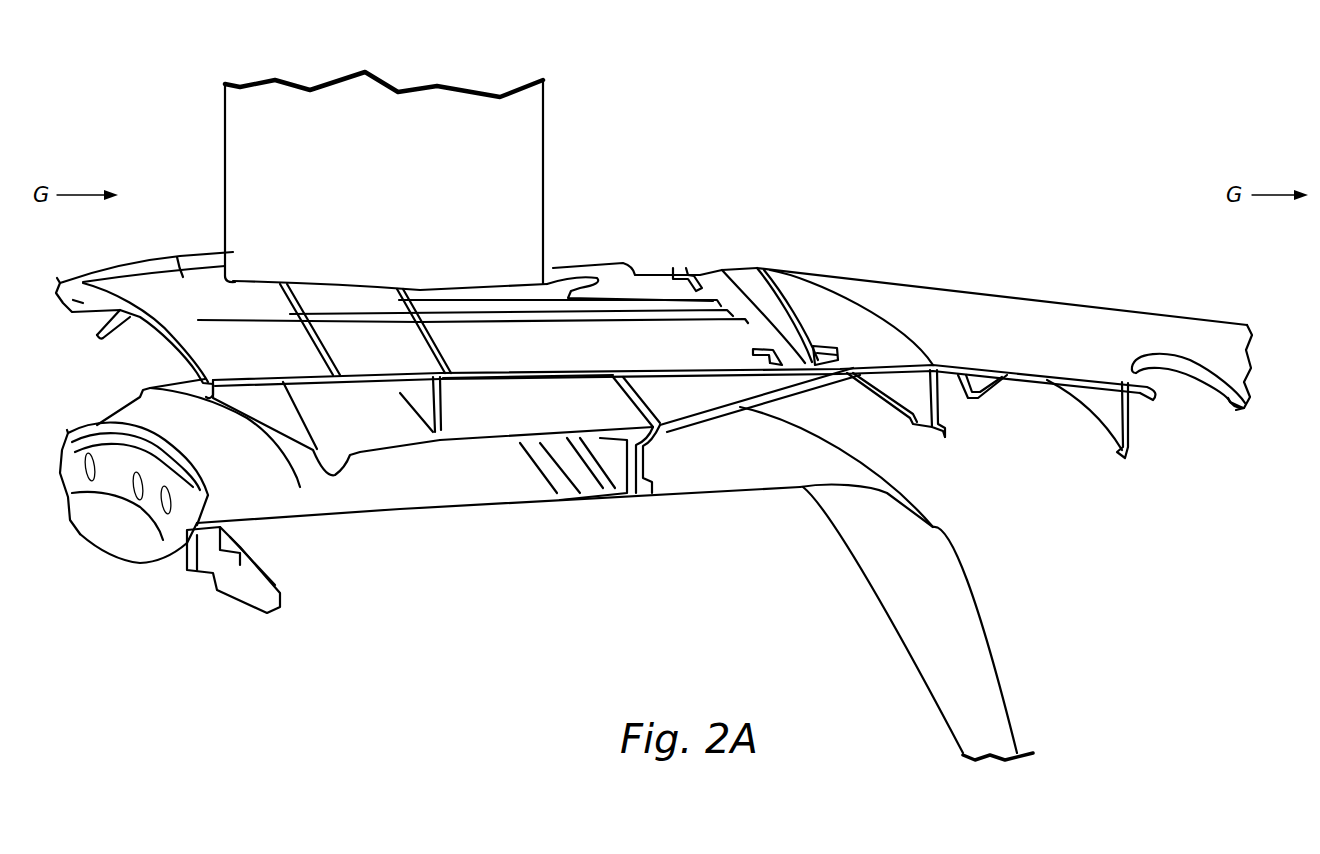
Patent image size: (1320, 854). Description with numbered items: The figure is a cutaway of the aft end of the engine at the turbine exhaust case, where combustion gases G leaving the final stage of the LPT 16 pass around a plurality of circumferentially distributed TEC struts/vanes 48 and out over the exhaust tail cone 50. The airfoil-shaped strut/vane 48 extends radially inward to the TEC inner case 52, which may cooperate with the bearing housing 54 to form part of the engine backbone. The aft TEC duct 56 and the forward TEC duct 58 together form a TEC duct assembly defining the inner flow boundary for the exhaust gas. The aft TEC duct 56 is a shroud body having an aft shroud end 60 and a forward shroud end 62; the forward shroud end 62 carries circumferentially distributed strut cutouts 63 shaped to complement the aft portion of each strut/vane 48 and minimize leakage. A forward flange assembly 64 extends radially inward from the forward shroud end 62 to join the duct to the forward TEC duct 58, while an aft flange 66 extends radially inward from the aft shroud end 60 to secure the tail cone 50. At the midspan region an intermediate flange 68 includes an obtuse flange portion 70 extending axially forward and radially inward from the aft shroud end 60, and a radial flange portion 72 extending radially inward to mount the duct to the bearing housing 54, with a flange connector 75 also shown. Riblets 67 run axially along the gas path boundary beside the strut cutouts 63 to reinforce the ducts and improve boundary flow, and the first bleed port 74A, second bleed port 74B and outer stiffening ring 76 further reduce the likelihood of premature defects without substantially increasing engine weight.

The LPT 16 is at (30, 629).
The TEC strut/vane 48 is at (398, 225).
The exhaust tail cone 50 is at (1124, 302).
The TEC inner case 52 is at (582, 416).
The bearing housing 54 is at (500, 508).
The aft TEC duct 56 is at (820, 198).
The forward TEC duct 58 is at (371, 361).
The aft shroud end 60 is at (885, 333).
The forward shroud end 62 is at (522, 356).
The strut cutout 63 is at (548, 272).
The forward flange assembly 64 is at (440, 401).
The aft flange 66 is at (903, 430).
The riblet 67 is at (399, 300).
The intermediate flange 68 is at (757, 420).
The obtuse flange portion 70 is at (703, 402).
The radial flange portion 72 is at (662, 458).
The first bleed port 74A is at (676, 270).
The second bleed port 74B is at (779, 362).
The flange connector 75 is at (857, 383).
The outer stiffening ring 76 is at (838, 347).